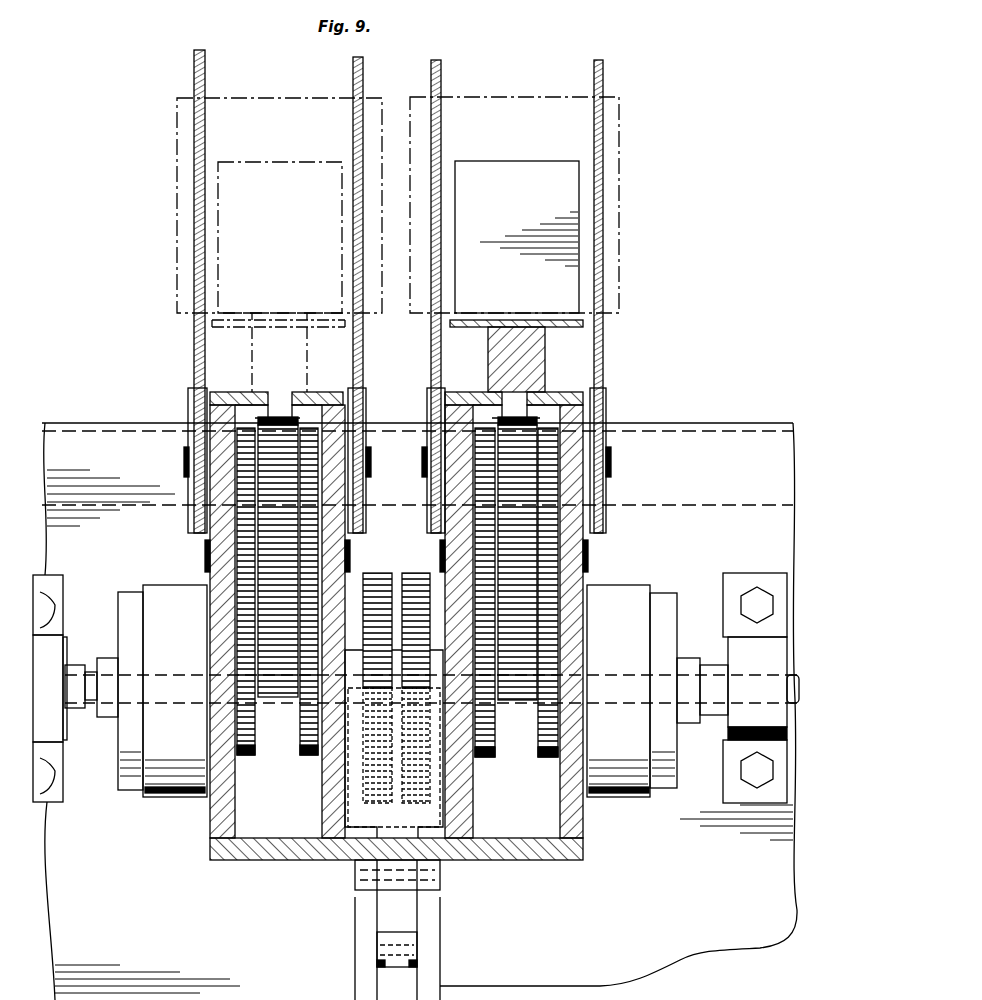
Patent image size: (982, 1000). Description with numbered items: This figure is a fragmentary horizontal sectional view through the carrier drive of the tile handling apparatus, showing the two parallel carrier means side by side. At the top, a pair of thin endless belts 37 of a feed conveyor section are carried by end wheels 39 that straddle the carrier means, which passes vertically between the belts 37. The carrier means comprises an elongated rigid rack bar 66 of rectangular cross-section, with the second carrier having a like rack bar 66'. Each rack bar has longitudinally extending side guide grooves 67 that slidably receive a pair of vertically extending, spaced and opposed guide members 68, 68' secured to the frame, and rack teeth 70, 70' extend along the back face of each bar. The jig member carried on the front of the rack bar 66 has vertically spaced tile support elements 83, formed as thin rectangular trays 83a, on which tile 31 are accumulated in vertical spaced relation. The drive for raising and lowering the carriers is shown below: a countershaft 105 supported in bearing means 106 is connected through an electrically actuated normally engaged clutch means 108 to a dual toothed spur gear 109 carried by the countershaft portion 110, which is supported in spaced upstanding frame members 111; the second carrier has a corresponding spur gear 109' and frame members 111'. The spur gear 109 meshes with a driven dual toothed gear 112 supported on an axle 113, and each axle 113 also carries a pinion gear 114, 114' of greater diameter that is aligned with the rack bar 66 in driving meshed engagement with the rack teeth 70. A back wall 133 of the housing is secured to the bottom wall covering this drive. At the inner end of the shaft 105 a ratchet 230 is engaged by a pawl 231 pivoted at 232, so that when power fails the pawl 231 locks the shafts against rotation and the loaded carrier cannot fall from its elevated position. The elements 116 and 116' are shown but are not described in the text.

The endless belts 37 is at (430, 75).
The tile 31 is at (176, 143).
The tile support elements 83 is at (509, 161).
The tray 83a is at (578, 217).
The rack bar 66' is at (260, 359).
The rack bar 66 is at (530, 359).
The guide members 68' is at (204, 384).
The guide members 68 is at (607, 378).
The rack teeth 70' is at (317, 384).
The rack teeth 70 is at (561, 413).
The side guide grooves 67 is at (488, 392).
The end wheels 39 is at (427, 393).
The bearing block 116' is at (156, 424).
The bearing block 116 is at (518, 451).
The pinion gear 114' is at (278, 577).
The pinion gear 114 is at (593, 500).
The ratchet 230 is at (420, 573).
The axle 113 is at (588, 560).
The driven dual toothed gear 112 is at (550, 585).
The countershaft 105 is at (701, 668).
The bearing means 106 is at (735, 723).
The countershaft portion 110 is at (508, 700).
The spur gear 109' is at (277, 608).
The dual toothed spur gear 109 is at (516, 608).
The frame members 111' is at (277, 621).
The frame members 111 is at (514, 621).
The clutch means 108 is at (605, 798).
The back wall 133 is at (290, 862).
The pawl 231 is at (426, 820).
The pivot 232 is at (440, 880).